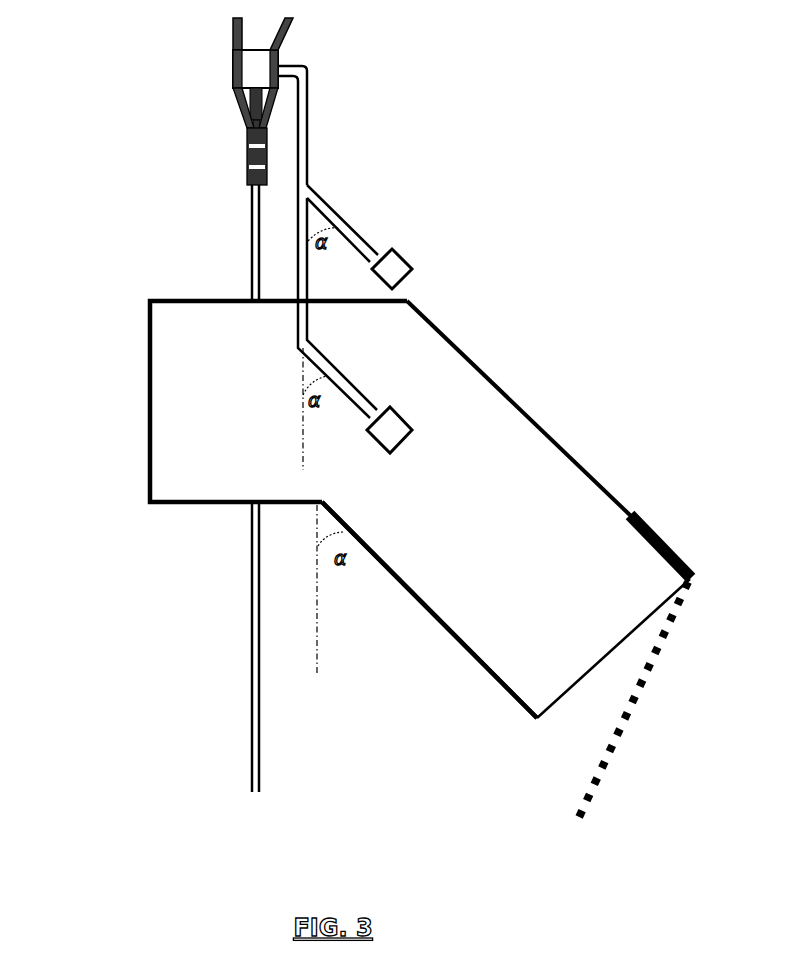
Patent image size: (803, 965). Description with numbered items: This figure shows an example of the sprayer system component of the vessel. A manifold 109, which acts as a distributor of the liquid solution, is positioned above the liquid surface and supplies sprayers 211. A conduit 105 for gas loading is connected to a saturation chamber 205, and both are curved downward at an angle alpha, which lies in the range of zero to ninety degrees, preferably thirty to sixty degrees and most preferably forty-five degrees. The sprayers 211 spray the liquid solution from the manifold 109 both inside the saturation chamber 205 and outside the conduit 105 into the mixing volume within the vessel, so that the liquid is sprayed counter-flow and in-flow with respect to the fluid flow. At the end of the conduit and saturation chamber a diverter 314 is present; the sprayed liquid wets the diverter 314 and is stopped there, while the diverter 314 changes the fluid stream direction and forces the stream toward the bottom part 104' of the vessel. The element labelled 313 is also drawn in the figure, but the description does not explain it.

The conduit 105 is at (137, 432).
The saturation chamber 205 is at (386, 570).
The bottom part 104' is at (158, 488).
The manifold 109 is at (265, 72).
The funnel nozzle 313 is at (229, 108).
The sprayer 211 is at (353, 212).
The diverter 314 is at (633, 726).